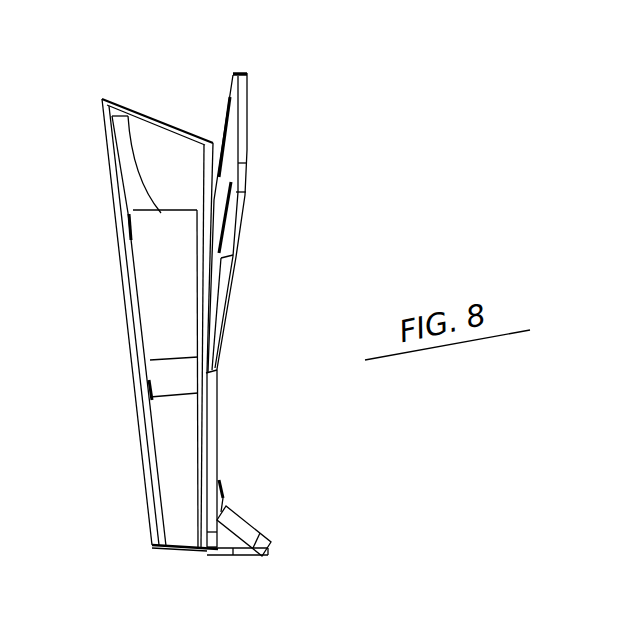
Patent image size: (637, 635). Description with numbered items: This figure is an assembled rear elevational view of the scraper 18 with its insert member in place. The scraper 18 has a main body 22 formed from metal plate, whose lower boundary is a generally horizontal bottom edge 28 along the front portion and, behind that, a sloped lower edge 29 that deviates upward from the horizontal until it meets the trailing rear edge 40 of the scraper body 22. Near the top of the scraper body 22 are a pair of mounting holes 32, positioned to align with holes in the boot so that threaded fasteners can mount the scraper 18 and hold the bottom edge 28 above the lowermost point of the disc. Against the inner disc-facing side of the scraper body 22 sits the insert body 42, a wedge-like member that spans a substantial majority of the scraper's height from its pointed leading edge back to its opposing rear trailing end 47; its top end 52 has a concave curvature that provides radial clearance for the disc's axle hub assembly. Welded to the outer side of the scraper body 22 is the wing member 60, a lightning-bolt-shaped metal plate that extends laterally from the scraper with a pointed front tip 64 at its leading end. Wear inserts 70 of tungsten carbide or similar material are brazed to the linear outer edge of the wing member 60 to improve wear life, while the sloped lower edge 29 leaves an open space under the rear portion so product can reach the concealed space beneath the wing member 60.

The scraper 18 is at (252, 165).
The main body 22 is at (177, 179).
The bottom edge 28 is at (207, 553).
The sloped lower edge 29 is at (200, 549).
The mounting holes 32 is at (228, 113).
The trailing rear edge 40 is at (212, 433).
The insert body 42 is at (164, 296).
The rear trailing end 47 is at (175, 483).
The top end 52 is at (133, 178).
The wing member 60 is at (263, 524).
The front tip 64 is at (240, 522).
The wear inserts 70 is at (272, 555).